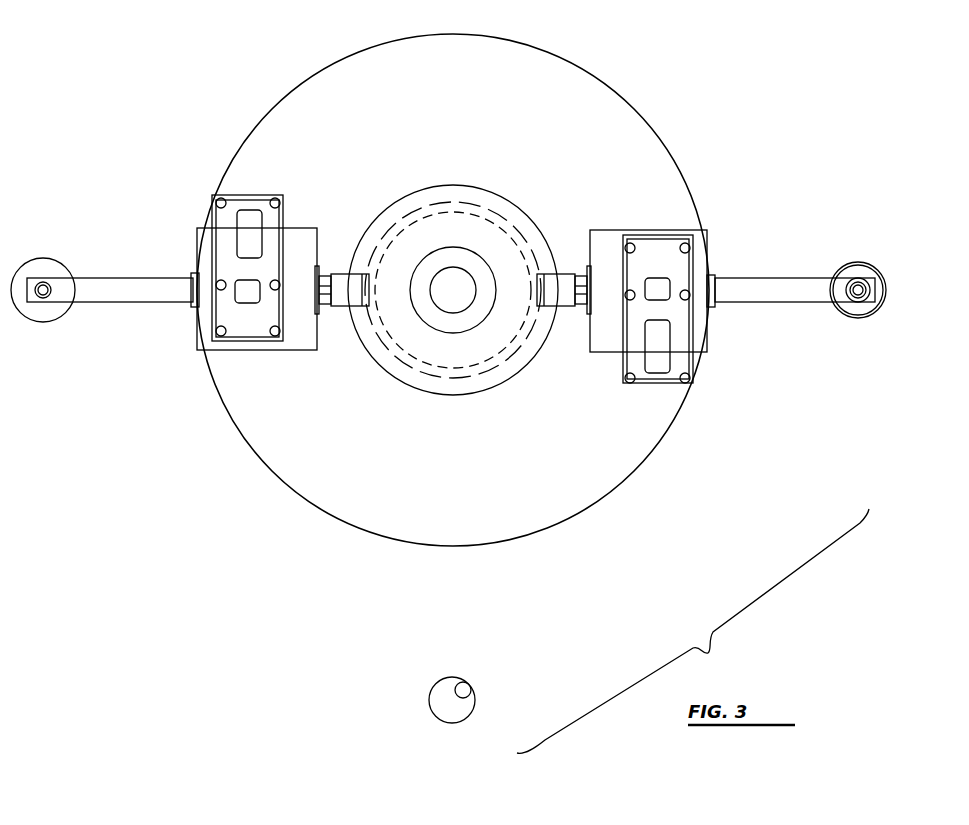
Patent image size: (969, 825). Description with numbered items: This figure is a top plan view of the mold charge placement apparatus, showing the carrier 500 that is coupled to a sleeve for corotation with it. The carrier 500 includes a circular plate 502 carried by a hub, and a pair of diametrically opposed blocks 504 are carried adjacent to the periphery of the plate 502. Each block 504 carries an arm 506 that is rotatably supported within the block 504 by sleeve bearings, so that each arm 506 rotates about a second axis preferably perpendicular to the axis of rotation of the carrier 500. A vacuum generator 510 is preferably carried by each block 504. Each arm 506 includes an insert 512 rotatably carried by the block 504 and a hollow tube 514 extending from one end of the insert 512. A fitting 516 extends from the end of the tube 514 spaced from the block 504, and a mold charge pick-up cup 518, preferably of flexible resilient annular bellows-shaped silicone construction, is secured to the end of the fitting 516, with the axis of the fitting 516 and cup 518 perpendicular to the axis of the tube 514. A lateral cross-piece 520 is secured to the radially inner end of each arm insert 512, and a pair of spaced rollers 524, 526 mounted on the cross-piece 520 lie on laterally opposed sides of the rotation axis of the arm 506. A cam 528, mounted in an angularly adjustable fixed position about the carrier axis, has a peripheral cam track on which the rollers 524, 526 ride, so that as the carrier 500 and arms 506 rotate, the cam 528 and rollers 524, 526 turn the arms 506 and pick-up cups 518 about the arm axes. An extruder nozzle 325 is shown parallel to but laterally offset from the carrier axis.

The extruder nozzle 325 is at (468, 683).
The carrier 500 is at (641, 121).
The circular plate 502 is at (555, 68).
The block 504 is at (298, 343).
The arm 506 is at (146, 300).
The vacuum generator 510 is at (250, 197).
The insert 512 is at (577, 272).
The hollow tube 514 is at (115, 285).
The fitting 516 is at (860, 276).
The mold charge pick-up cup 518 is at (60, 308).
The lateral cross-piece 520 is at (338, 307).
The roller 524 is at (548, 276).
The roller 526 is at (358, 275).
The cam 528 is at (457, 193).